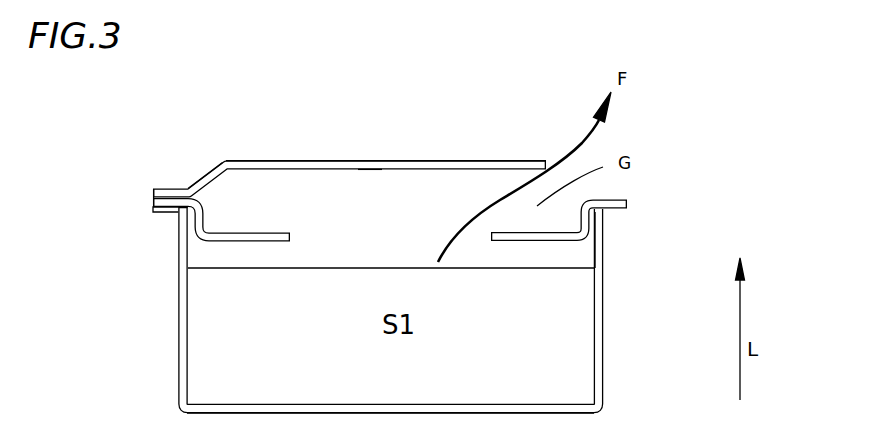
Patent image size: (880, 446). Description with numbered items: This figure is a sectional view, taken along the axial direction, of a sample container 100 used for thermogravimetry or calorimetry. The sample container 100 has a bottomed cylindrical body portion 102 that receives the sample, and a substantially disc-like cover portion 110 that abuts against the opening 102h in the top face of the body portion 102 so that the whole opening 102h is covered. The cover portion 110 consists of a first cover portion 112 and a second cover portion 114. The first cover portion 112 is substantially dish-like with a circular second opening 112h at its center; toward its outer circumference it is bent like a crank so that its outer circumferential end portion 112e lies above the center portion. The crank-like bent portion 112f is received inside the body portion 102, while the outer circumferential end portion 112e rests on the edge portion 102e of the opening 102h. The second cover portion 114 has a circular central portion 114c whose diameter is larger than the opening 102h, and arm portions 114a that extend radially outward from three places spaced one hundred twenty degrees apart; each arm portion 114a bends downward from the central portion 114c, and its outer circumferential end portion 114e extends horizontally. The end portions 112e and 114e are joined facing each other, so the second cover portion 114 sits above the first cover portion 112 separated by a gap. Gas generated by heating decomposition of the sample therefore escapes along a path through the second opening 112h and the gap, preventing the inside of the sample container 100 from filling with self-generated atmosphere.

The sample container 100 is at (736, 148).
The body portion 102 is at (379, 308).
The edge portion 102e is at (177, 222).
The opening 102h is at (533, 262).
The cover portion 110 is at (410, 147).
The first cover portion 112 is at (331, 169).
The outer circumferential end portion 112e is at (153, 207).
The crank-like bent portion 112f is at (208, 218).
The second opening 112h is at (423, 230).
The second cover portion 114 is at (291, 146).
The arm portion 114a is at (213, 171).
The central portion 114c is at (367, 170).
The outer circumferential end portion 114e is at (153, 195).